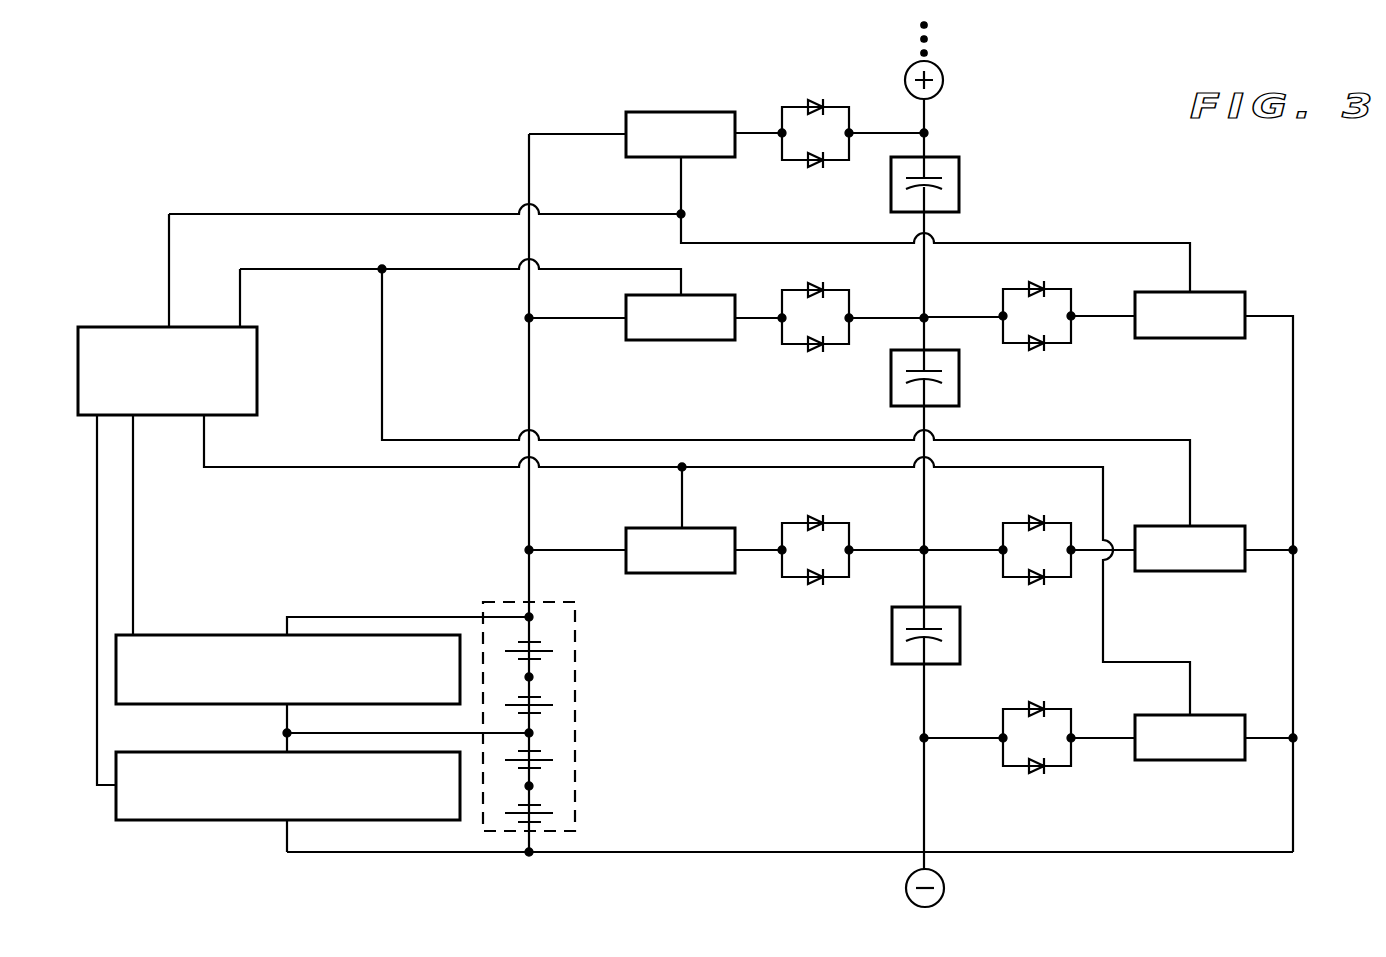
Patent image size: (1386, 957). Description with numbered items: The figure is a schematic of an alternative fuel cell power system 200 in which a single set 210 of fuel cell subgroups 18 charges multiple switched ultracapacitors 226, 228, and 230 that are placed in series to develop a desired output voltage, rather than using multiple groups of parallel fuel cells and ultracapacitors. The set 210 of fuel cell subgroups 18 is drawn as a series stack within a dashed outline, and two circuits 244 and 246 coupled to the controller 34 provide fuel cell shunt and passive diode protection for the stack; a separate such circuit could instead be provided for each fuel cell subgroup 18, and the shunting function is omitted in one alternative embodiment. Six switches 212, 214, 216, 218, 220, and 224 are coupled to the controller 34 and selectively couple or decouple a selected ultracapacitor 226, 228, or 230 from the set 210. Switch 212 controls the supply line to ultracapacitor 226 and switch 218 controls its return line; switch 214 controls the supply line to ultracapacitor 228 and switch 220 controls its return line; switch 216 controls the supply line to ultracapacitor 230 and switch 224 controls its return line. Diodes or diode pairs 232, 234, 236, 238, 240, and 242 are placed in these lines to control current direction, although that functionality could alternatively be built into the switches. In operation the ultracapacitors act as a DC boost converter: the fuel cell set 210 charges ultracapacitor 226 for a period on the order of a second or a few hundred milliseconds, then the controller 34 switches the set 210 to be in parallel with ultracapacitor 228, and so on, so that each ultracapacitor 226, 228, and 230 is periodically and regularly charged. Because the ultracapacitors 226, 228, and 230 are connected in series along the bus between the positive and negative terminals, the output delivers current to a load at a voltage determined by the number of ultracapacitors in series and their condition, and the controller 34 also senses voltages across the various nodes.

The fuel cell system 200 is at (245, 160).
The controller 34 is at (147, 325).
The switch 212 is at (697, 112).
The switch 214 is at (700, 295).
The switch 216 is at (710, 573).
The switch 218 is at (1213, 292).
The switch 220 is at (1213, 573).
The switch 224 is at (1213, 760).
The ultracapacitor 226 is at (945, 152).
The ultracapacitor 228 is at (891, 392).
The ultracapacitor 230 is at (912, 667).
The diode pair 232 is at (806, 187).
The diode pair 234 is at (797, 367).
The diode pair 236 is at (1047, 367).
The diode pair 238 is at (810, 604).
The diode pair 240 is at (1033, 493).
The diode pair 242 is at (1033, 793).
The fuel cell shunt and passive diode protection circuitry 244 is at (257, 633).
The fuel cell shunt and passive diode protection circuitry 246 is at (257, 748).
The fuel cell subgroup 18 is at (553, 668).
The set of fuel cell subgroups 210 is at (575, 797).